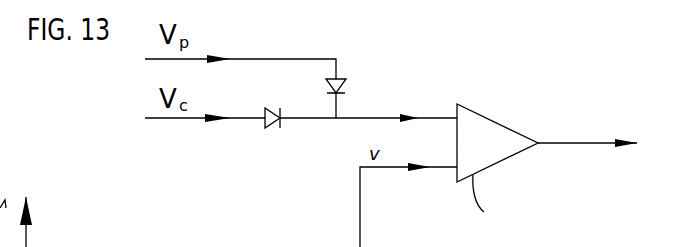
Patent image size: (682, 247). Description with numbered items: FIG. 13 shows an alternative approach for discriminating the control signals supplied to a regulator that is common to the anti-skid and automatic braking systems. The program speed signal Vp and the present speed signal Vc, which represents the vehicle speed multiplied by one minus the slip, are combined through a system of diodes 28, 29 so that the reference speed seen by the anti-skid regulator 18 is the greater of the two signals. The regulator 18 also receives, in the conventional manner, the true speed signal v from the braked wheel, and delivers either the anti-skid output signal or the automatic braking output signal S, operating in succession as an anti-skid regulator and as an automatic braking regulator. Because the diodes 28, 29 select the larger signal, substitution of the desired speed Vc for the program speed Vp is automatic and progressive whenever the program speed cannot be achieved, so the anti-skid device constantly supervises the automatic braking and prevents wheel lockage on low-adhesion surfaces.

The anti-skid regulator 18 is at (480, 153).
The diode 28 is at (348, 85).
The diode 29 is at (271, 124).